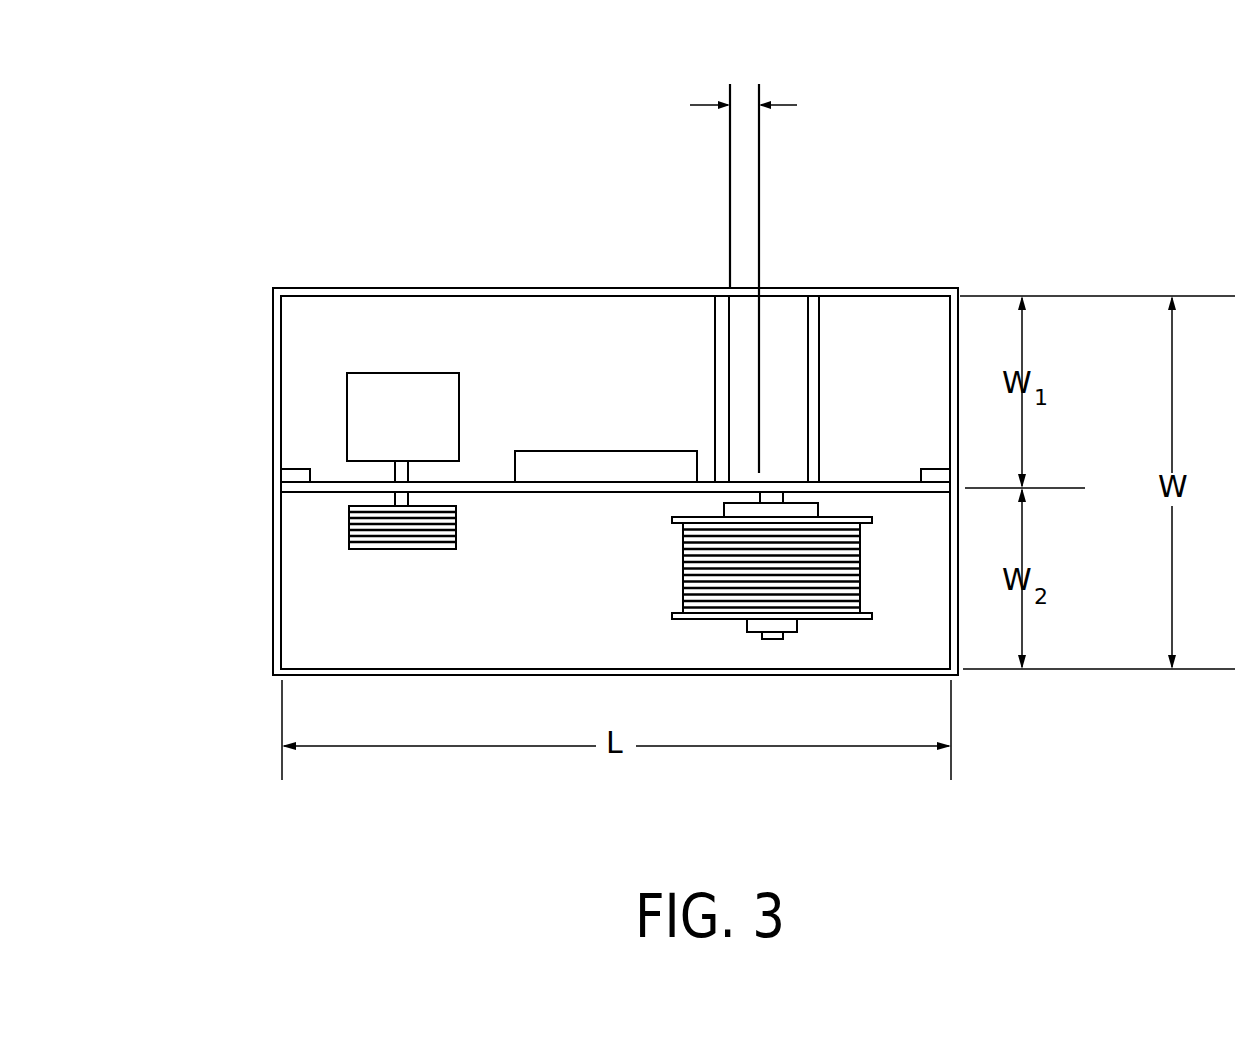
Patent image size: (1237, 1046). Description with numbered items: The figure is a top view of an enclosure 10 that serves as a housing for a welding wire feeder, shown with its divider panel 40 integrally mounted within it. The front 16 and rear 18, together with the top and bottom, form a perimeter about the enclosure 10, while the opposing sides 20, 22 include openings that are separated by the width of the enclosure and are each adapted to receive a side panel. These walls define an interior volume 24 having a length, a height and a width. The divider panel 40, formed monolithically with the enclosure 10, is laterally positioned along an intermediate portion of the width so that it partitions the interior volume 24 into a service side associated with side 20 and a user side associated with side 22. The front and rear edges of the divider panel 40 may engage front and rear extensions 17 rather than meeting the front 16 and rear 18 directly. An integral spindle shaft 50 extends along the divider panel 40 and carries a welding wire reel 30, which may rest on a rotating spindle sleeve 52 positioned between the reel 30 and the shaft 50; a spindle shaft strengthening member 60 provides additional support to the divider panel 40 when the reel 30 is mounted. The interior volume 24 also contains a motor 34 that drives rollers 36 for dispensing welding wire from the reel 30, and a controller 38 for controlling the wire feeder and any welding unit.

The enclosure 10 is at (1131, 192).
The front 16 is at (273, 323).
The front and/or rear extension 17 is at (290, 468).
The rear 18 is at (959, 333).
The side 20 is at (522, 296).
The side 22 is at (326, 677).
The interior volume 24 is at (345, 337).
The welding wire reel 30 is at (672, 617).
The motor 34 is at (459, 395).
The roller 36 is at (408, 550).
The controller 38 is at (601, 451).
The divider panel 40 is at (567, 493).
The spindle shaft 50 is at (784, 636).
The spindle sleeve 52 is at (747, 630).
The spindle shaft strengthening member 60 is at (715, 322).